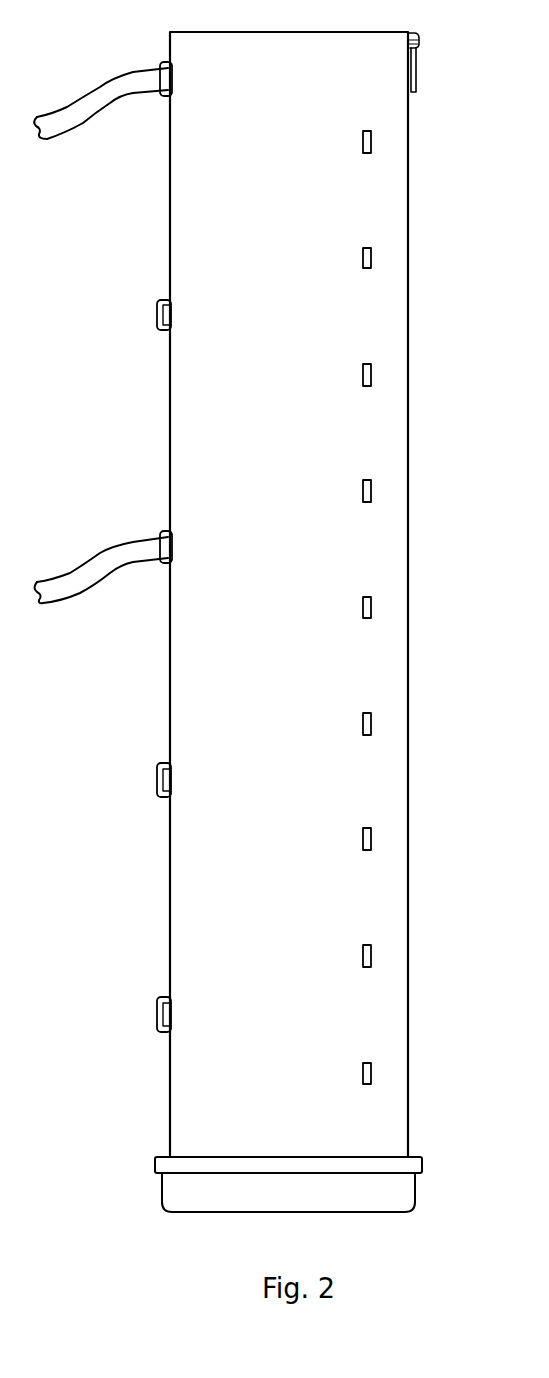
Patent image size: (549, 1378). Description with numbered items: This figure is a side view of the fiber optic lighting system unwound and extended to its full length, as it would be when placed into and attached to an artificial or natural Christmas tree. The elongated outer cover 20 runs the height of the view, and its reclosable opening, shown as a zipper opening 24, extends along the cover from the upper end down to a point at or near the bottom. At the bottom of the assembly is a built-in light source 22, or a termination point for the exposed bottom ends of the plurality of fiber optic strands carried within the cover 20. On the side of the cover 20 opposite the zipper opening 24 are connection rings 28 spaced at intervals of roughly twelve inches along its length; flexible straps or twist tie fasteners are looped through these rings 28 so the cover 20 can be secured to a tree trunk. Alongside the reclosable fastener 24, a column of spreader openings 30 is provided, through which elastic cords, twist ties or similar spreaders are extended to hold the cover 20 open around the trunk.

The outer cover 20 is at (190, 229).
The built-in light source 22 is at (172, 1190).
The zipper opening 24 is at (408, 100).
The connection rings 28 is at (158, 307).
The spreader openings 30 is at (372, 262).